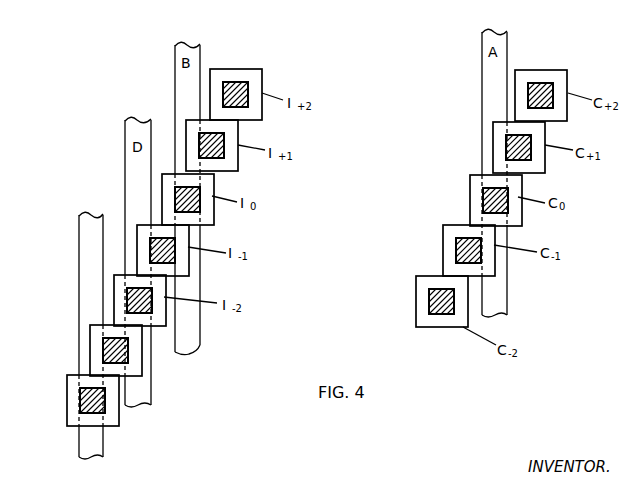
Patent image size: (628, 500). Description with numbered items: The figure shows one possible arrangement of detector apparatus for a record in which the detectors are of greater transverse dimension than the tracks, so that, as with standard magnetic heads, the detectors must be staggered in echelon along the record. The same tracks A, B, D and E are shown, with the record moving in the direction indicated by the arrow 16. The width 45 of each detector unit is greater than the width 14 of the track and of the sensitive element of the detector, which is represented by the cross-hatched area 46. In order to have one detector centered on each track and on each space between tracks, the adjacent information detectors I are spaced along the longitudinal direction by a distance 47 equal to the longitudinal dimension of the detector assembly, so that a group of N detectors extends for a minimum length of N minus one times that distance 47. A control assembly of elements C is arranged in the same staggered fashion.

The width of the track 14 is at (128, 249).
The direction of strip movement arrow 16 is at (20, 128).
The width of the detector unit 45 is at (150, 472).
The cross-hatched area 46 is at (104, 407).
The distance equal to the longitudinal dimension of the detector assembly 47 is at (45, 333).